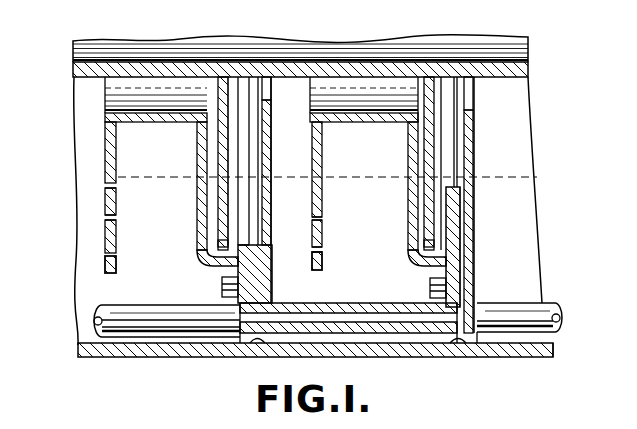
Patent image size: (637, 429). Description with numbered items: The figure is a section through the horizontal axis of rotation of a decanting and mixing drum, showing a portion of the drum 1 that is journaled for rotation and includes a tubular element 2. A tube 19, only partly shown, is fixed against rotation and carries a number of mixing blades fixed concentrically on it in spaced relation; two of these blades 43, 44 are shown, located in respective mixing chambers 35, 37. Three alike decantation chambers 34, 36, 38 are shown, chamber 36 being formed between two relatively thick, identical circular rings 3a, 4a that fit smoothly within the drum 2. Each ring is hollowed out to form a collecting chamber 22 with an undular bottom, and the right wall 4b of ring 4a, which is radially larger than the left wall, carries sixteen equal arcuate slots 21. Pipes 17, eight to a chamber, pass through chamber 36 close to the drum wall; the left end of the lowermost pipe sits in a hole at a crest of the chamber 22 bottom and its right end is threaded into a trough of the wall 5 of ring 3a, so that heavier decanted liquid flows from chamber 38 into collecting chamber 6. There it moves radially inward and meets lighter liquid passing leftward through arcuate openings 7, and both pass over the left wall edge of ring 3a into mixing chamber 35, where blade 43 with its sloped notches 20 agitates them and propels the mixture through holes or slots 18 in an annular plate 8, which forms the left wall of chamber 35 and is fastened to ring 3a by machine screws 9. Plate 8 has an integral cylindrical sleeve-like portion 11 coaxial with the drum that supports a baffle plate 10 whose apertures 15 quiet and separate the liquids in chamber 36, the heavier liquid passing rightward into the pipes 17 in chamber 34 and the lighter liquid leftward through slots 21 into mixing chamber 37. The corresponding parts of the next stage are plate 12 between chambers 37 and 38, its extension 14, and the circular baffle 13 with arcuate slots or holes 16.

The portion of the drum 1 is at (530, 358).
The tubular element 2 is at (173, 350).
The circular ring 3a is at (470, 120).
The circular ring 4a is at (272, 155).
The right wall 4b is at (272, 99).
The wall 5 is at (472, 205).
The collecting chamber 6 is at (462, 242).
The arcuate openings 7 is at (468, 168).
The annular plate 8 is at (410, 153).
The machine screws 9 is at (430, 287).
The baffle plate 10 is at (313, 130).
The cylindrical sleeve-like portion 11 is at (370, 117).
The plate 12 is at (200, 198).
The circular baffle 13 is at (90, 168).
The extension 14 is at (135, 128).
The apertures 15 is at (323, 222).
The arcuate slots or holes 16 is at (118, 190).
The pipe 17 is at (140, 313).
The holes or arcuate slots 18 is at (413, 222).
The tube 19 is at (530, 66).
The notches 20 is at (207, 258).
The arcuate slots 21 is at (272, 175).
The collecting chamber 22 is at (272, 258).
The decantation chamber 34 is at (535, 267).
The mixing chamber 35 is at (458, 253).
The decantation chamber 36 is at (375, 205).
The mixing chamber 37 is at (207, 147).
The decantation chamber 38 is at (88, 294).
The mixing blade 43 is at (418, 93).
The mixing blade 44 is at (272, 228).